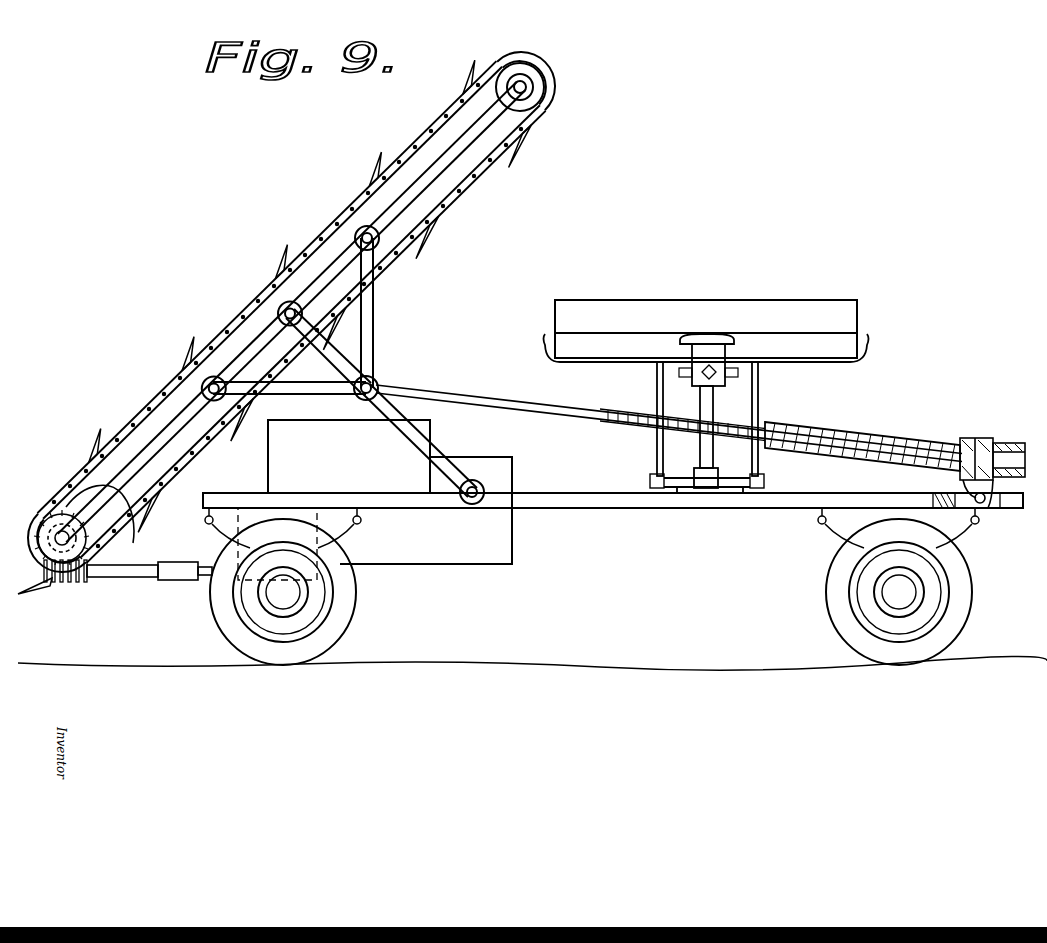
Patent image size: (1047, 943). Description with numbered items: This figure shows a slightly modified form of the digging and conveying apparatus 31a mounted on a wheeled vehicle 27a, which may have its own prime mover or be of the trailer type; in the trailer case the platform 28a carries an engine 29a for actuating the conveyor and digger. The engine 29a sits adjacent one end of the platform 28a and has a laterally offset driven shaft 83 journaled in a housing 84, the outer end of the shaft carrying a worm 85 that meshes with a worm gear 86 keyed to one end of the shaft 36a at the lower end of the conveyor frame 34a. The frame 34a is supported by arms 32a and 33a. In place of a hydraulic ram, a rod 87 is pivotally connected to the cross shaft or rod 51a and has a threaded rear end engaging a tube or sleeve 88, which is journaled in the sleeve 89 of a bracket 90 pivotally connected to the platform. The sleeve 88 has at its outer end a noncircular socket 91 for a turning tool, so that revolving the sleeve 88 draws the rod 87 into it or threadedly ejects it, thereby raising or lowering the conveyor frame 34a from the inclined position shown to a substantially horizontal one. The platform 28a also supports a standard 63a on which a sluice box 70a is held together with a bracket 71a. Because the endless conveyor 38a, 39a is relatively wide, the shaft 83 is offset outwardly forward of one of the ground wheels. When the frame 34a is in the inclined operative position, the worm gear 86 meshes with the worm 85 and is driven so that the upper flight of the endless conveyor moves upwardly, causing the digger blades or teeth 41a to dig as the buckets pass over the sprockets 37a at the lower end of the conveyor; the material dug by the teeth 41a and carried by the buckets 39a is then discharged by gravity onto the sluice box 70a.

The digging and conveying apparatus 31a is at (344, 190).
The conveyor frame 34a is at (185, 433).
The digger blades or teeth 41a is at (195, 342).
The endless conveyor 38a is at (150, 396).
The buckets 39a is at (95, 446).
The sprockets 37a is at (145, 495).
The worm gear 86 is at (57, 514).
The shaft 36a is at (105, 540).
The worm 85 is at (50, 586).
The driven shaft 83 is at (110, 574).
The housing 84 is at (166, 582).
The arm 33a is at (376, 310).
The cross shaft or rod 51a is at (374, 386).
The arm 32a is at (445, 455).
The rod 87 is at (503, 398).
The tube or sleeve 88 is at (895, 440).
The sleeve 89 is at (971, 438).
The noncircular socket 91 is at (1016, 445).
The bracket 90 is at (988, 504).
The wheeled vehicle 27a is at (554, 514).
The platform 28a is at (658, 508).
The engine 29a is at (390, 492).
The sluice box 70a is at (649, 303).
The bracket 71a is at (648, 391).
The standard 63a is at (724, 407).